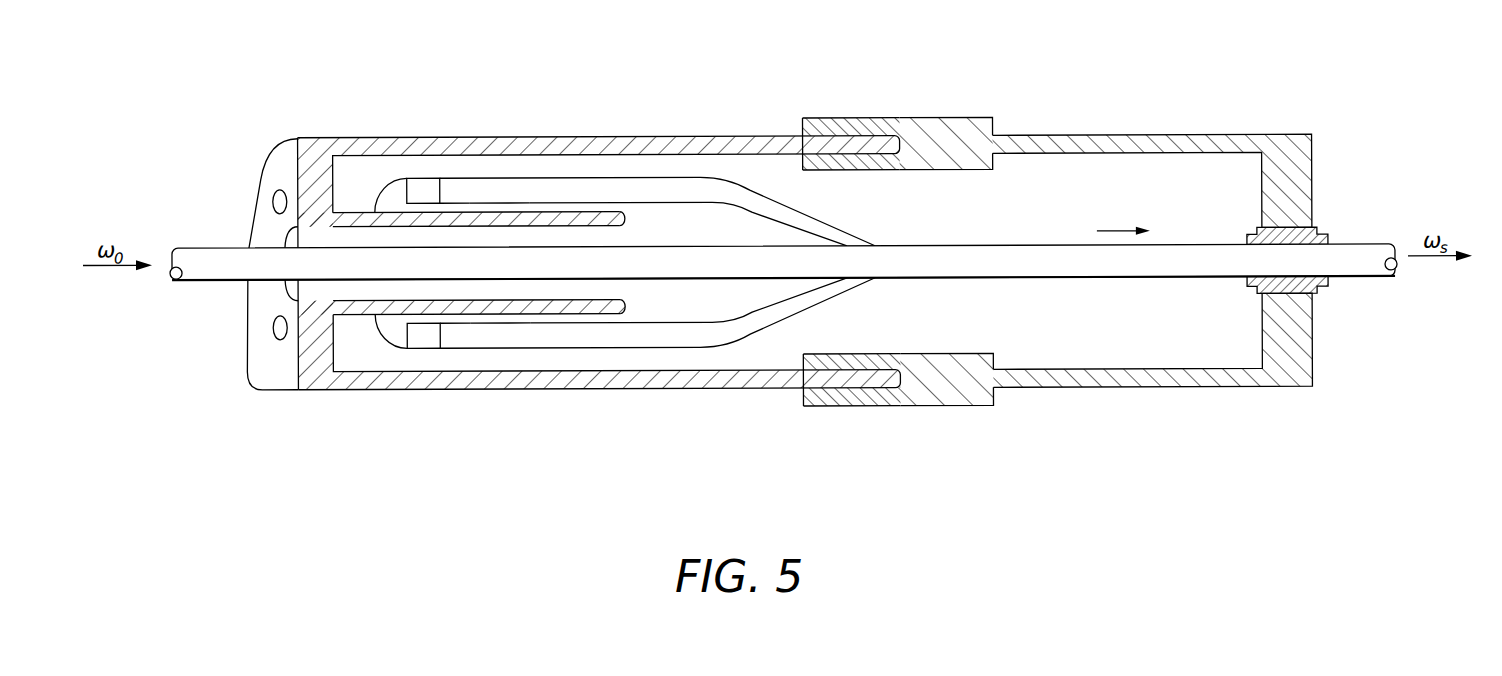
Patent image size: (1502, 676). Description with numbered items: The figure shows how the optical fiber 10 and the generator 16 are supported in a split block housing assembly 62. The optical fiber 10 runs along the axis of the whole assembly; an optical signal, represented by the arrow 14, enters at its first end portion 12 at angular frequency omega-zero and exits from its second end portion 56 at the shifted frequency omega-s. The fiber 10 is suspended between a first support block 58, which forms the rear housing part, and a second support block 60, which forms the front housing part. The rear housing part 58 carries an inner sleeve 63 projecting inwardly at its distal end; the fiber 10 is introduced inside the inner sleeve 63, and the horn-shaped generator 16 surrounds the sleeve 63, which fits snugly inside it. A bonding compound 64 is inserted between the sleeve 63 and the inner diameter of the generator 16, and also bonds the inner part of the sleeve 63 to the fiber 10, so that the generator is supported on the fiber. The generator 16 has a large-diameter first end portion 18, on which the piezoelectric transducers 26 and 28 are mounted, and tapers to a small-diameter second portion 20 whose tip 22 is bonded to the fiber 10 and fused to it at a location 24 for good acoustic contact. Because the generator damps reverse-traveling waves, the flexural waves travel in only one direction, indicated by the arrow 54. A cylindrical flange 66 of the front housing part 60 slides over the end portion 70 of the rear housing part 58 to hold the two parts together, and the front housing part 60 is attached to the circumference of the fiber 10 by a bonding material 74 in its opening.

The optical fiber 10 is at (972, 248).
The first end portion 12 is at (170, 250).
The optical signal arrow 14 is at (120, 265).
The generator 16 is at (579, 173).
The first end portion 18 is at (388, 192).
The second portion 20 is at (755, 190).
The tip 22 is at (848, 237).
The fusing location 24 is at (868, 283).
The piezoelectric transducer 26 is at (427, 190).
The piezoelectric transducer 28 is at (425, 338).
The propagation direction arrow 54 is at (1120, 232).
The second end portion 56 is at (1378, 280).
The first support block 58 is at (298, 135).
The second support block 60 is at (1095, 136).
The split block housing assembly 62 is at (748, 392).
The inner sleeve 63 is at (597, 293).
The bonding compound 64 is at (500, 208).
The cylindrical flange 66 is at (945, 118).
The end portion 70 is at (853, 140).
The bonding material 74 is at (1318, 232).